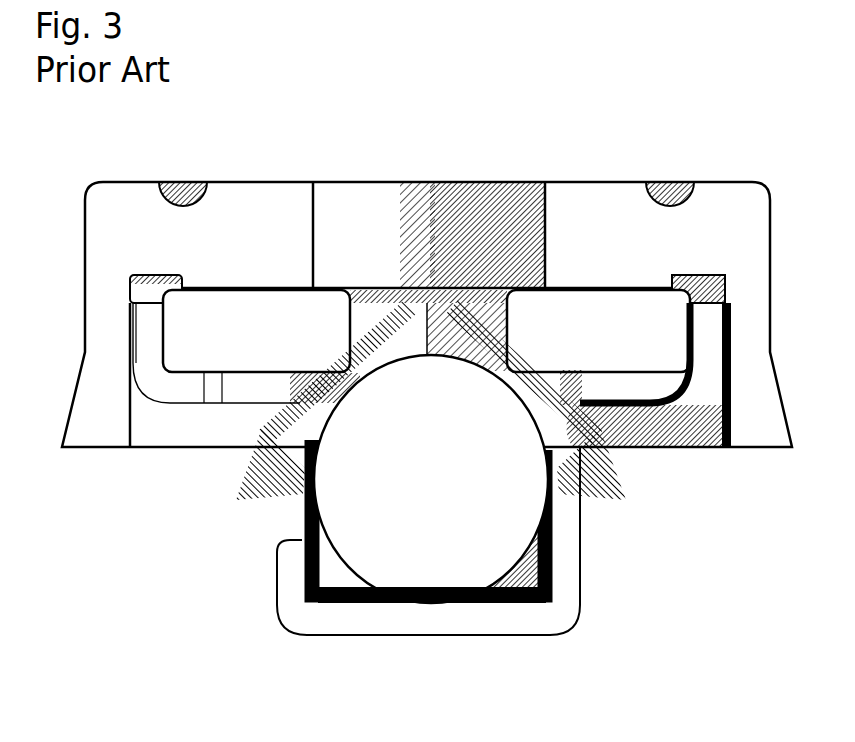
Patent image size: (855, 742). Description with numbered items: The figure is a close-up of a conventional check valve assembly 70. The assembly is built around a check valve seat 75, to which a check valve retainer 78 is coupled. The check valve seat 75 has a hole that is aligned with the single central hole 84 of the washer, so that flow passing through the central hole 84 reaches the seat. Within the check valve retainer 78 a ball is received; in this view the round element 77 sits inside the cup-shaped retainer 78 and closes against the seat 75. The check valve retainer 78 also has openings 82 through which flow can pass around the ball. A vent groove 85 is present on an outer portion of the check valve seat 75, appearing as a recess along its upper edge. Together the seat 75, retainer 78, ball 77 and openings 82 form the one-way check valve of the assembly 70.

The check valve assembly 70 is at (77, 163).
The check valve seat 75 is at (232, 340).
The tube 77 is at (446, 485).
The check valve retainer 78 is at (566, 616).
The openings 82 is at (297, 548).
The single central hole 84 is at (540, 227).
The vent groove 85 is at (184, 193).